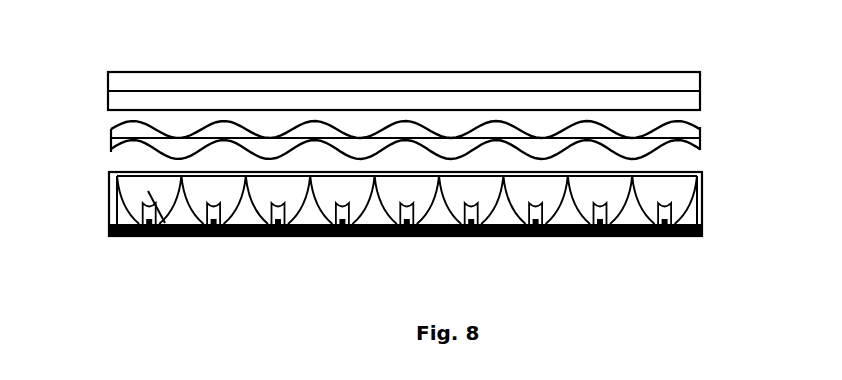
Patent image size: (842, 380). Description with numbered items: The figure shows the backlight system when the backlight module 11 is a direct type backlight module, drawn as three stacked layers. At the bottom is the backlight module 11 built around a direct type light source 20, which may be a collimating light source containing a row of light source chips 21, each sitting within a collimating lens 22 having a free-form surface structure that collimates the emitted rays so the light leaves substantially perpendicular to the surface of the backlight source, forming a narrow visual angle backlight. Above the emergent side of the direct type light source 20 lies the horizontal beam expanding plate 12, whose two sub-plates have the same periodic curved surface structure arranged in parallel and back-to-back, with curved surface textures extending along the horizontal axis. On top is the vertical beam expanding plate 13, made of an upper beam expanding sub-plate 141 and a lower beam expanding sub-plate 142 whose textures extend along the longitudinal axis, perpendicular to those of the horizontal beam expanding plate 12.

The vertical beam expanding plate 13 is at (108, 110).
The upper beam expanding sub-plate 141 is at (383, 72).
The lower beam expanding sub-plate 142 is at (700, 103).
The horizontal beam expanding plate 12 is at (108, 120).
The backlight module 11 is at (457, 204).
The direct type light source 20 is at (700, 173).
The light source chip 21 is at (143, 223).
The collimating lens 22 is at (173, 236).